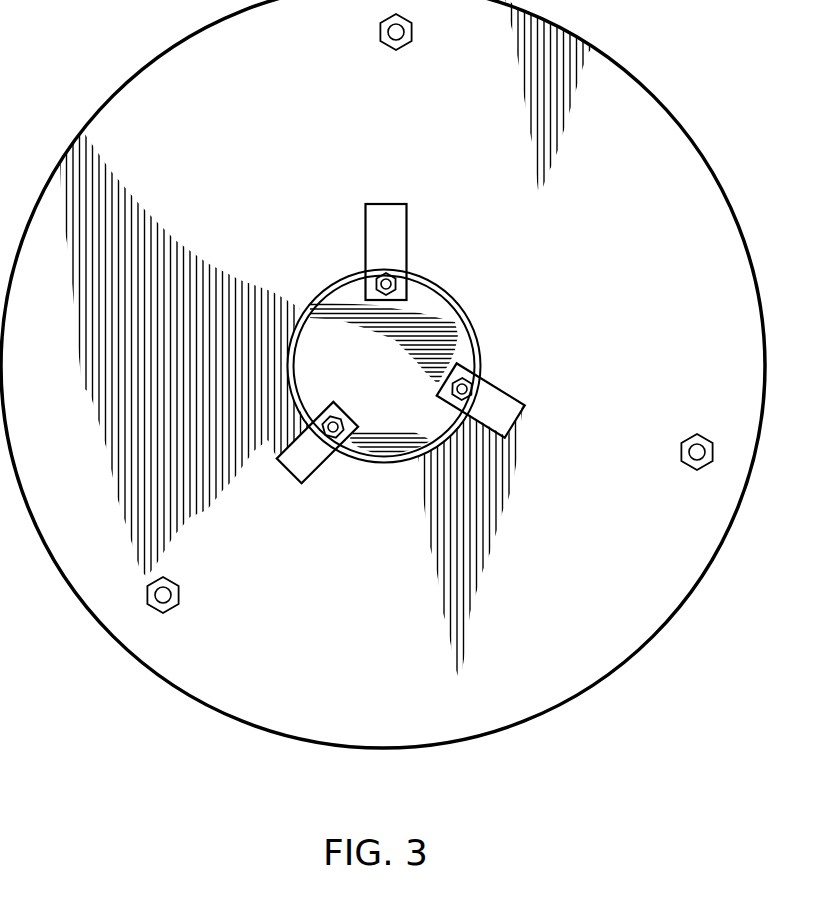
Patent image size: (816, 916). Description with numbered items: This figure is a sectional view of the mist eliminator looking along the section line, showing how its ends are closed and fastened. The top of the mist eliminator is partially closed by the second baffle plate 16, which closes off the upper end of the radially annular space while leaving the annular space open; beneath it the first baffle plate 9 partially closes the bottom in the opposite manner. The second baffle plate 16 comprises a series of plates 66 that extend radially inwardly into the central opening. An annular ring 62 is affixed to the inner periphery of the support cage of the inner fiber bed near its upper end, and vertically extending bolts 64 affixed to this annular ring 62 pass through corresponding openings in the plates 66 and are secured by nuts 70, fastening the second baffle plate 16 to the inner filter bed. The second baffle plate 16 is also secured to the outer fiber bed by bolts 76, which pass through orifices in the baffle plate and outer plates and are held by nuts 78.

The first baffle plate 9 is at (378, 369).
The second baffle plate 16 is at (402, 634).
The annular ring 62 is at (289, 364).
The bolts 64 is at (394, 279).
The plates 66 is at (402, 233).
The nuts 70 is at (378, 282).
The bolts 76 is at (411, 32).
The nuts 78 is at (681, 466).